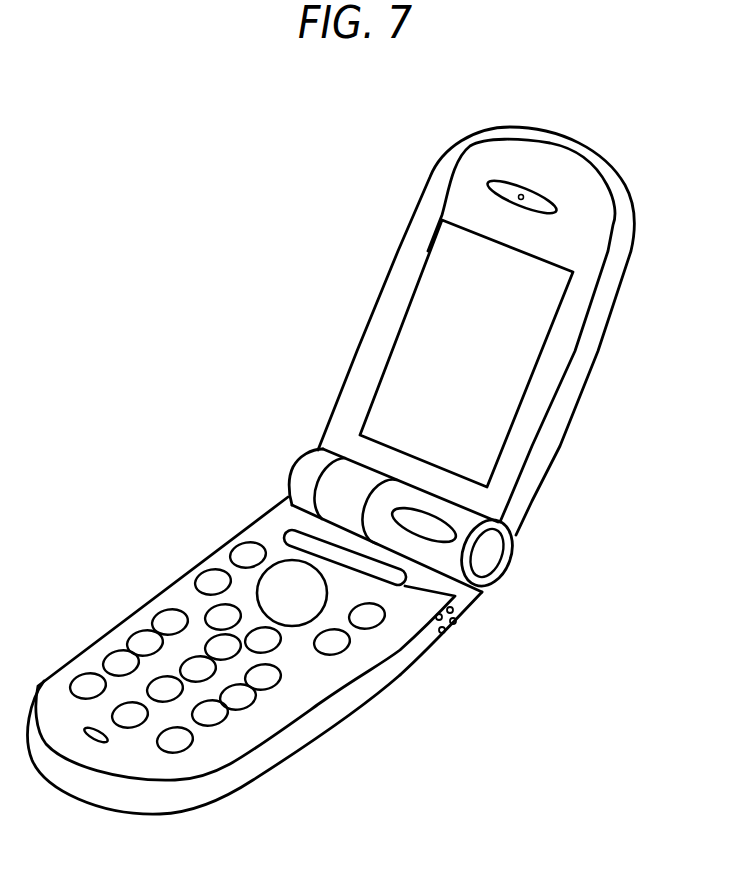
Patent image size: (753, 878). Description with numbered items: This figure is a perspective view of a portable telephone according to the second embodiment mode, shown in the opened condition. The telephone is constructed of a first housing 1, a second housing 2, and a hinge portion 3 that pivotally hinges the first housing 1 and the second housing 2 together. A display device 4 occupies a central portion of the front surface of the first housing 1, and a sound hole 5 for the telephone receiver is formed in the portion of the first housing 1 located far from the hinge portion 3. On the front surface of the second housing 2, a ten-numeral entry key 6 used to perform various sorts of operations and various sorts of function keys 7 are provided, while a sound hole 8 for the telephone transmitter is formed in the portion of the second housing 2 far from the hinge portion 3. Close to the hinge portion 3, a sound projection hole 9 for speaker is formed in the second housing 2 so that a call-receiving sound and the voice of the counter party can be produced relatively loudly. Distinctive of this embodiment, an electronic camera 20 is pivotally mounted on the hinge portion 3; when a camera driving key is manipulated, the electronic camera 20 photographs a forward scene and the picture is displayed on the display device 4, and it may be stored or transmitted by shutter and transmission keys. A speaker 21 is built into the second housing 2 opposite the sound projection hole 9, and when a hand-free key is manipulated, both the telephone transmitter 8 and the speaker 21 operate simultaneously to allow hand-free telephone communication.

The first housing 1 is at (594, 359).
The second housing 2 is at (293, 747).
The hinge portion 3 is at (316, 470).
The display device 4 is at (418, 345).
The sound hole for telephone receiver 5 is at (522, 197).
The ten-numeral entry key 6 is at (130, 630).
The function keys 7 is at (290, 567).
The sound hole for telephone transmitter 8 is at (95, 738).
The sound projection hole for speaker 9 is at (481, 594).
The electronic camera 20 is at (430, 521).
The speaker 21 is at (455, 620).